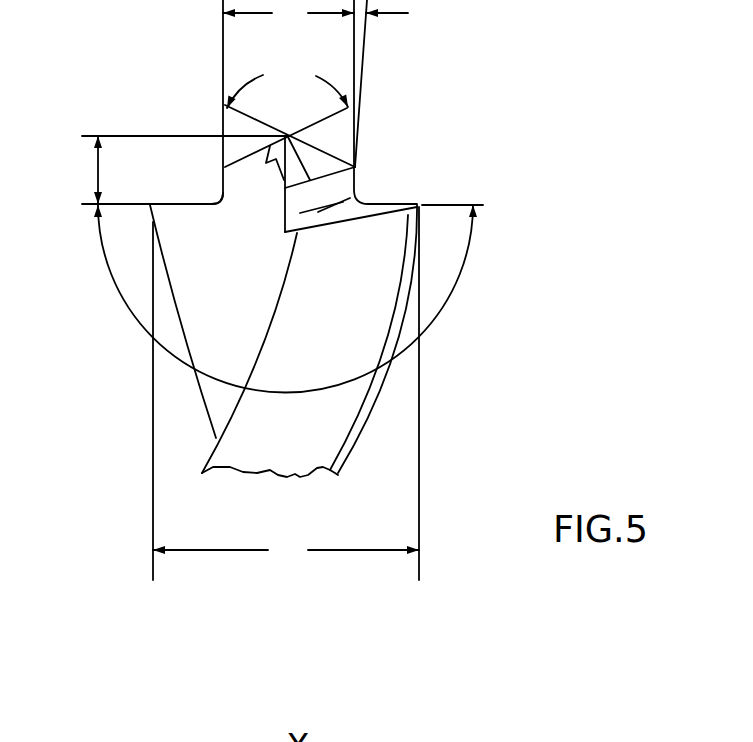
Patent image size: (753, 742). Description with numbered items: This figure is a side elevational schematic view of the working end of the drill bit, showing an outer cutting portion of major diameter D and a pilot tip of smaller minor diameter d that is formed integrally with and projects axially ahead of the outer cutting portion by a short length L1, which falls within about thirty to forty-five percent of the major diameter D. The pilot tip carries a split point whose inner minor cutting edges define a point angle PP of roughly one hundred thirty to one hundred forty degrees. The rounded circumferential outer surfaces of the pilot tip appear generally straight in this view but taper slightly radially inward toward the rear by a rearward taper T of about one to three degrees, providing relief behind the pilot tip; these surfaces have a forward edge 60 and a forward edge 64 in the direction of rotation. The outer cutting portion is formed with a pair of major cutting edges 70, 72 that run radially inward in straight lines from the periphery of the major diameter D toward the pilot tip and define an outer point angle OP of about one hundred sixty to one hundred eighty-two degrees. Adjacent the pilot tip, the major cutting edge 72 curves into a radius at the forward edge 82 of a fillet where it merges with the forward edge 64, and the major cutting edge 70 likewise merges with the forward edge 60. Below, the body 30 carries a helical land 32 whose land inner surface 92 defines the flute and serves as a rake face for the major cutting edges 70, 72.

The drill body 30 is at (187, 280).
The helical land 32 is at (412, 243).
The forward edge 60 is at (356, 174).
The forward edge 64 is at (222, 187).
The major cutting edge 70 is at (390, 203).
The major cutting edge 72 is at (173, 205).
The forward edge of fillet 82 is at (220, 200).
The land inner surface 92 is at (199, 345).
The point angle PP is at (287, 80).
The outer point angle OP is at (433, 318).
The length of pilot tip L1 is at (166, 170).
The major diameter D is at (286, 393).
The minor diameter d is at (288, 13).
The rearward taper T is at (397, 83).